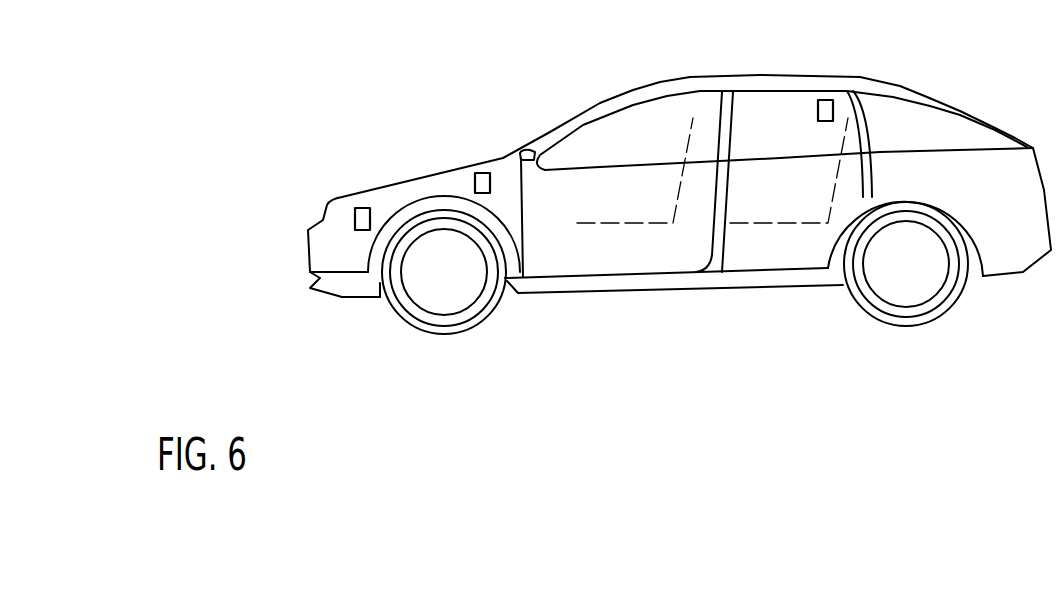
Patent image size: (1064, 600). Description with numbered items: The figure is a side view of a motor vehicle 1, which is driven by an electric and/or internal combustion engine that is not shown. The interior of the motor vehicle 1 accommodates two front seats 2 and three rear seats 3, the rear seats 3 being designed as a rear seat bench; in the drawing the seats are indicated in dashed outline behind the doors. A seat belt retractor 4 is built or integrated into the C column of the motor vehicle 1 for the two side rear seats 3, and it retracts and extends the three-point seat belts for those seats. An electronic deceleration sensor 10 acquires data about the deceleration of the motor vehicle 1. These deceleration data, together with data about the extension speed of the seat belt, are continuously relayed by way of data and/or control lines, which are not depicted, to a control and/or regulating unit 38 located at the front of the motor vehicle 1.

The motor vehicle 1 is at (338, 98).
The front seat 2 is at (637, 224).
The rear seat 3 is at (772, 224).
The seat belt retractor 4 is at (825, 99).
The electronic deceleration sensor 10 is at (478, 173).
The control and/or regulating unit 38 is at (360, 231).